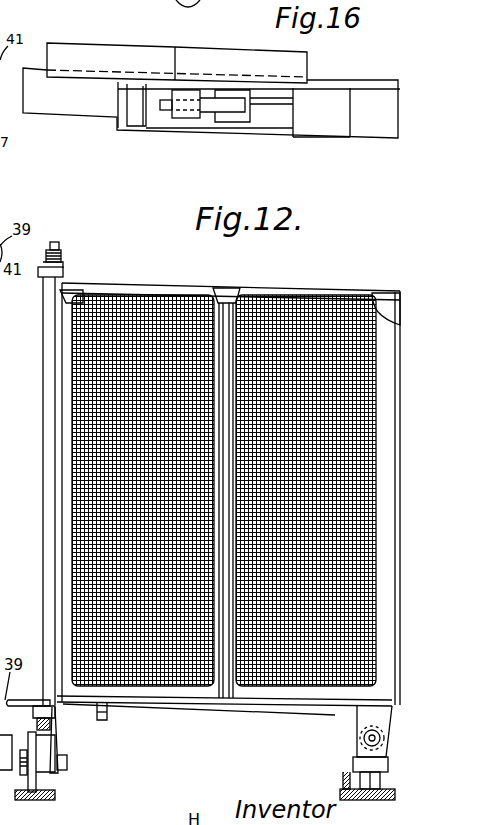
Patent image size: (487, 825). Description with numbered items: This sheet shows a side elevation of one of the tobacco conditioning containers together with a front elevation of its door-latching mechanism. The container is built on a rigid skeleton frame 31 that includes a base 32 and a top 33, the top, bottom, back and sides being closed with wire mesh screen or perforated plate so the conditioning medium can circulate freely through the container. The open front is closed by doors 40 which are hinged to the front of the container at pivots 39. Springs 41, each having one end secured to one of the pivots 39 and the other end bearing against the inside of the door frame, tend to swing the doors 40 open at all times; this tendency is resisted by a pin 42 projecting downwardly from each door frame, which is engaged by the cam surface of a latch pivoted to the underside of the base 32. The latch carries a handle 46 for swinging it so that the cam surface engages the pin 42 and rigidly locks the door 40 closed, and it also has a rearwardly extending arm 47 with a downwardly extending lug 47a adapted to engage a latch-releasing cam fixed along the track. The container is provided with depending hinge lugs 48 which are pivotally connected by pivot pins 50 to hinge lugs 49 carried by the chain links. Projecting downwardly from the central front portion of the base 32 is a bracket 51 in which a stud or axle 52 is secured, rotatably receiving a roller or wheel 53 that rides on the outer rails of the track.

In FIG. 16, the door 40 is at (328, 118).
In FIG. 16, the pin 42 is at (128, 120).
In FIG. 16, the handle 46 is at (165, 110).
In FIG. 12, the handle 46 is at (18, 694).
In FIG. 12, the top 33 is at (151, 292).
In FIG. 12, the pivot 39 is at (60, 249).
In FIG. 12, the spring 41 is at (63, 262).
In FIG. 12, the bracket 51 is at (60, 735).
In FIG. 12, the roller or wheel 53 is at (37, 785).
In FIG. 12, the stud or axle 52 is at (12, 742).
In FIG. 12, the rearwardly extending arm 47 is at (118, 711).
In FIG. 12, the lug 47a is at (119, 725).
In FIG. 12, the base 32 is at (160, 703).
In FIG. 12, the skeleton frame 31 is at (290, 692).
In FIG. 12, the hinge lug 48 is at (368, 718).
In FIG. 12, the pivot pin 50 is at (362, 740).
In FIG. 12, the hinge lug 49 is at (356, 750).